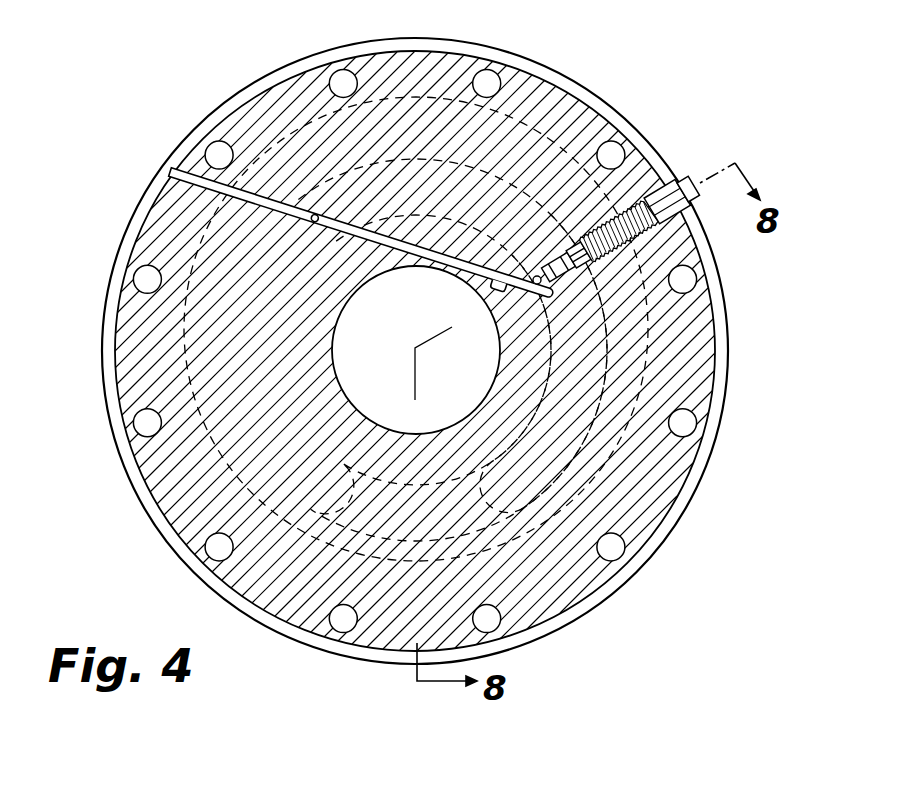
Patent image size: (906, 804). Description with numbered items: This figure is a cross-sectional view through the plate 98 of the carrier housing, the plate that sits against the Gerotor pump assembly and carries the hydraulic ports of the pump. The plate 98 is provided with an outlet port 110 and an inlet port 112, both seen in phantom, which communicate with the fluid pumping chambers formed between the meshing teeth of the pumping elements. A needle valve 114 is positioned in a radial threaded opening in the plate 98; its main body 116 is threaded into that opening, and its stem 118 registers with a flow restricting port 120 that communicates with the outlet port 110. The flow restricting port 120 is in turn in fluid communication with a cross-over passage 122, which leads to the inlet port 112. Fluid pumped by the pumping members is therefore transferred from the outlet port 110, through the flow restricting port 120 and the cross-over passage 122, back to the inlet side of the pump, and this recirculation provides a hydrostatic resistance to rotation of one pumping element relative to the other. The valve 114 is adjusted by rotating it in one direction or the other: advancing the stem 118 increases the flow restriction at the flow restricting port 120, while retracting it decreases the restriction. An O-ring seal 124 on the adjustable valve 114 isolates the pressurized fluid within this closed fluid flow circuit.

The plate 98 is at (640, 468).
The outlet port 110 is at (590, 350).
The inlet port 112 is at (250, 339).
The needle valve 114 is at (630, 240).
The main body 116 is at (631, 222).
The stem 118 is at (561, 258).
The flow restricting port 120 is at (535, 276).
The cross-over passage 122 is at (345, 222).
The O-ring seal 124 is at (588, 247).